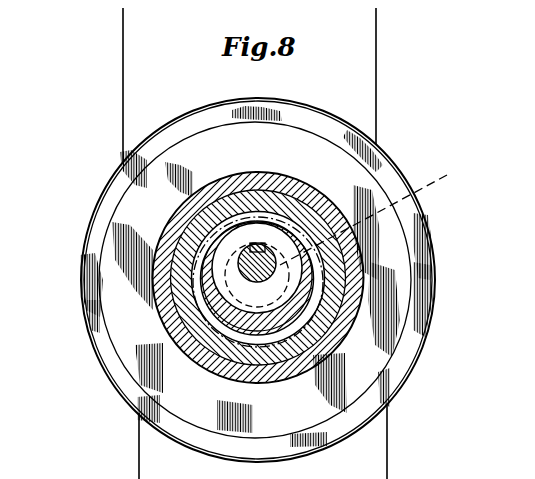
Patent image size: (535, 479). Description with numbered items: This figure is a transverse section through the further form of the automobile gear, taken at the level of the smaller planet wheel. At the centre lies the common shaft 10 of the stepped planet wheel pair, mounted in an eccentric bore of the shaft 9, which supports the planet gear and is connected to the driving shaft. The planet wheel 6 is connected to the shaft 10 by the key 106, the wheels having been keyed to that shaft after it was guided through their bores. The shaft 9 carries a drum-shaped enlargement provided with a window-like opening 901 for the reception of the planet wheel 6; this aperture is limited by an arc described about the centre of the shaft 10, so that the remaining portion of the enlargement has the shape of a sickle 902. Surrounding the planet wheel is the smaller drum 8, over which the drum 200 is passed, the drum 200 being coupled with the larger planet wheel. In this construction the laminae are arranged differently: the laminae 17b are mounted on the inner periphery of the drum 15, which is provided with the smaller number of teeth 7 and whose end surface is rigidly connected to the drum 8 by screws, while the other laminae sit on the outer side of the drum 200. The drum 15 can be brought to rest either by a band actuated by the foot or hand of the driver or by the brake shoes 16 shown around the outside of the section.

The planet wheel 6 is at (190, 318).
The teeth 7 is at (205, 355).
The drum 8 is at (220, 250).
The shaft 9 is at (371, 215).
The shaft 10 is at (238, 256).
The drum 15 is at (420, 328).
The brake shoes 16 is at (407, 447).
The laminae 17b is at (395, 267).
The key 106 is at (258, 243).
The drum 200 is at (190, 207).
The window-like opening 901 is at (205, 275).
The sickle 902 is at (290, 321).